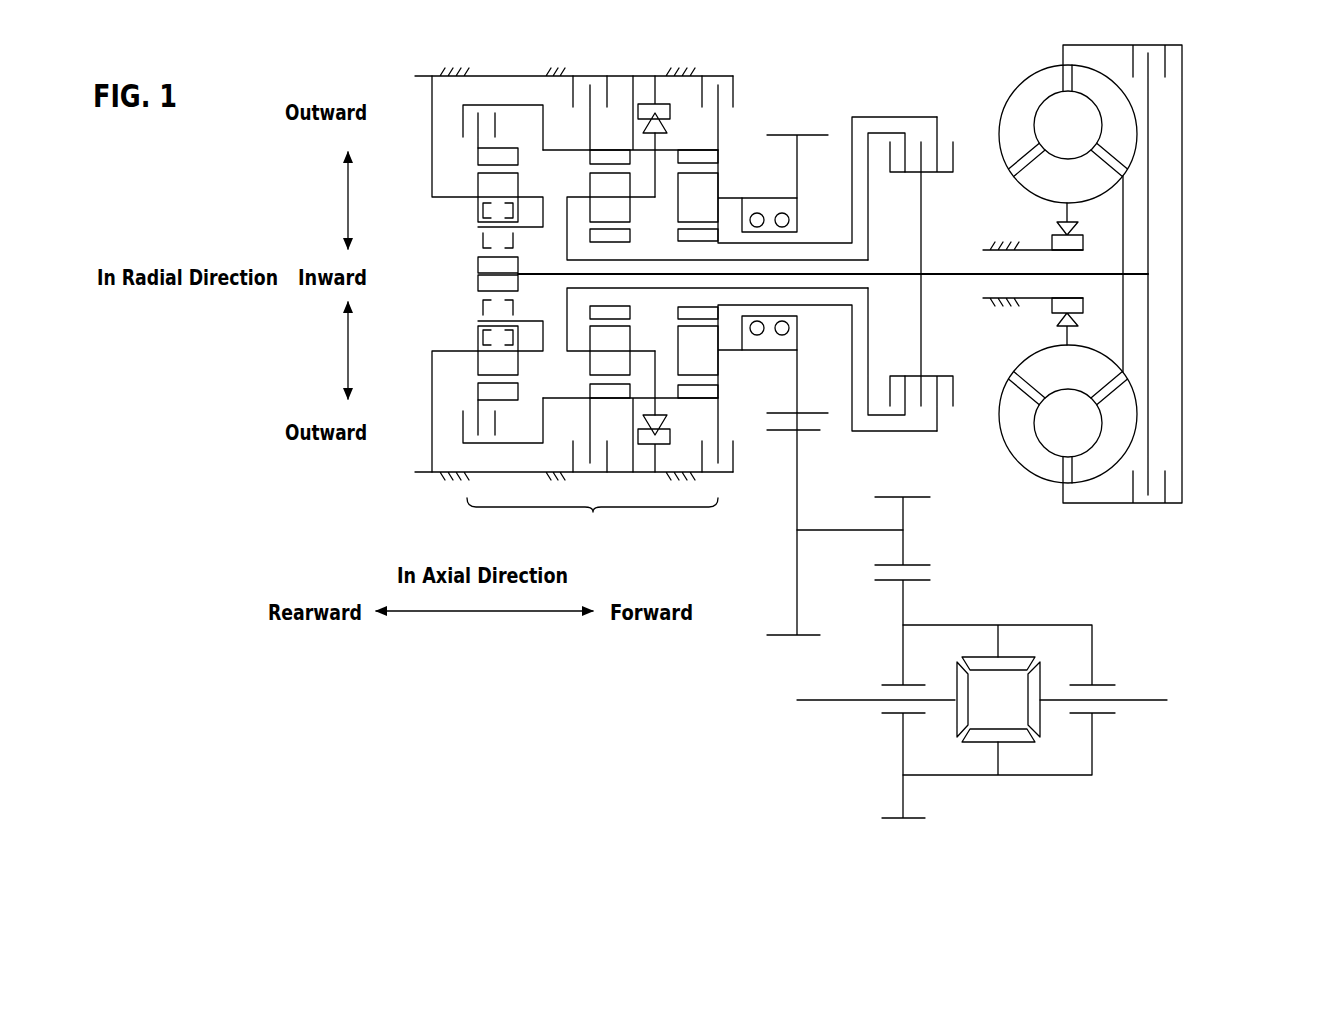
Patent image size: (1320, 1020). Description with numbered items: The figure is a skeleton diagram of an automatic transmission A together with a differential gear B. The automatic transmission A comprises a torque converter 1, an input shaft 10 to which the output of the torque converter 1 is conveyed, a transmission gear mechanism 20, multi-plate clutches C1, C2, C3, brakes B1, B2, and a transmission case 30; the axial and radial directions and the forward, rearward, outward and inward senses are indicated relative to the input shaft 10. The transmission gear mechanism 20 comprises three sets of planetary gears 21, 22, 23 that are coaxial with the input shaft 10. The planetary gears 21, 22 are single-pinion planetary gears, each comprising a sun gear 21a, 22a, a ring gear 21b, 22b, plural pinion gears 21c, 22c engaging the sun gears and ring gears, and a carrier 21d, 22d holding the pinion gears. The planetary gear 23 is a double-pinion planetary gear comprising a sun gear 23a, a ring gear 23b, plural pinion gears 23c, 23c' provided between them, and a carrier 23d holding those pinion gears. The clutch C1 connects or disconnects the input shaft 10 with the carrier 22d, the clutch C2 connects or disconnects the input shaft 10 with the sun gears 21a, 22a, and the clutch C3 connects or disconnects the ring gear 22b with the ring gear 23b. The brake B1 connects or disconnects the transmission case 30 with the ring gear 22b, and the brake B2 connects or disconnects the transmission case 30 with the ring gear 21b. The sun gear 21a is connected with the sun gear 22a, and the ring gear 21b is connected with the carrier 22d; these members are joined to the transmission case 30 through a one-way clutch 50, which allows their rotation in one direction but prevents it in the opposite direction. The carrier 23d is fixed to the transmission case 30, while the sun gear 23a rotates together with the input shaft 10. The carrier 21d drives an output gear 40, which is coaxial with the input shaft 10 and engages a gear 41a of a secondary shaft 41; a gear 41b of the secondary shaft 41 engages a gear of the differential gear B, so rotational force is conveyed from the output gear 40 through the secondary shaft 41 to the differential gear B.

The torque converter 1 is at (991, 83).
The input shaft 10 is at (945, 273).
The transmission gear mechanism 20 is at (658, 288).
The planetary gear 21 is at (737, 127).
The sun gear 21a is at (725, 221).
The ring gear 21b is at (718, 157).
The pinion gears 21c is at (718, 185).
The carrier 21d is at (718, 195).
The planetary gear 22 is at (614, 135).
The sun gear 22a is at (632, 235).
The ring gear 22b is at (595, 150).
The pinion gears 22c is at (590, 187).
The carrier 22d is at (649, 190).
The planetary gear 23 is at (448, 220).
The sun gear 23a is at (478, 268).
The ring gear 23b is at (478, 152).
The pinion gear 23c is at (449, 273).
The pinion gear 23c' is at (455, 283).
The carrier 23d is at (533, 227).
The transmission case 30 is at (627, 75).
The output gear 40 is at (820, 135).
The secondary shaft 41 is at (846, 530).
The gear 41a is at (813, 432).
The gear 41b is at (918, 497).
The one-way clutch 50 is at (657, 103).
The automatic transmission A is at (1260, 86).
The differential gear B is at (1124, 629).
The brake B1 is at (584, 67).
The brake B2 is at (726, 69).
The multi-plate clutch C1 is at (897, 183).
The multi-plate clutch C2 is at (942, 183).
The clutch C3 is at (486, 91).